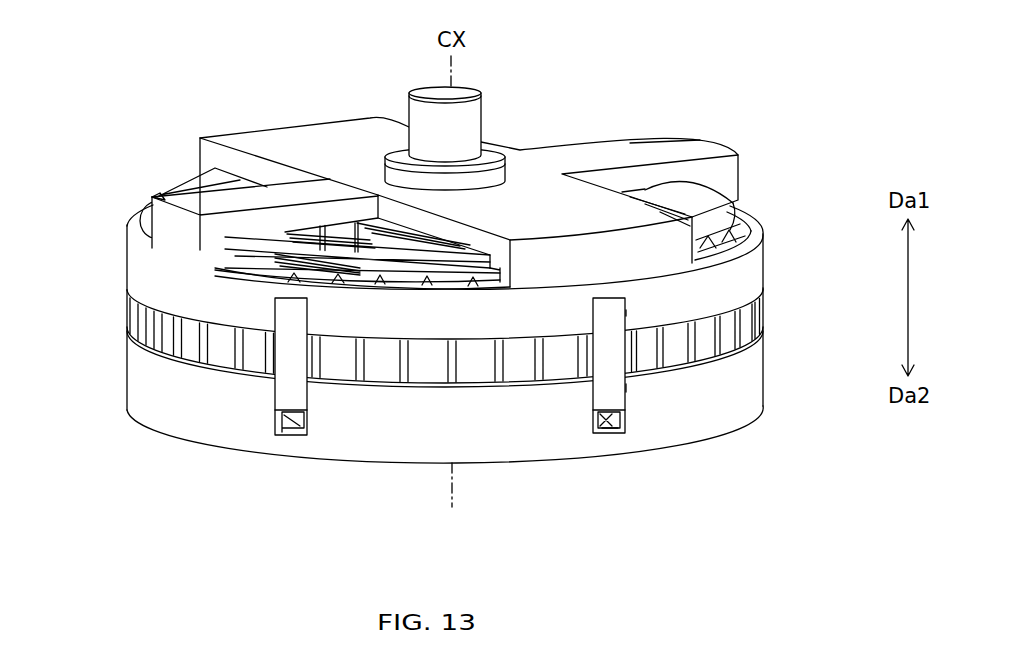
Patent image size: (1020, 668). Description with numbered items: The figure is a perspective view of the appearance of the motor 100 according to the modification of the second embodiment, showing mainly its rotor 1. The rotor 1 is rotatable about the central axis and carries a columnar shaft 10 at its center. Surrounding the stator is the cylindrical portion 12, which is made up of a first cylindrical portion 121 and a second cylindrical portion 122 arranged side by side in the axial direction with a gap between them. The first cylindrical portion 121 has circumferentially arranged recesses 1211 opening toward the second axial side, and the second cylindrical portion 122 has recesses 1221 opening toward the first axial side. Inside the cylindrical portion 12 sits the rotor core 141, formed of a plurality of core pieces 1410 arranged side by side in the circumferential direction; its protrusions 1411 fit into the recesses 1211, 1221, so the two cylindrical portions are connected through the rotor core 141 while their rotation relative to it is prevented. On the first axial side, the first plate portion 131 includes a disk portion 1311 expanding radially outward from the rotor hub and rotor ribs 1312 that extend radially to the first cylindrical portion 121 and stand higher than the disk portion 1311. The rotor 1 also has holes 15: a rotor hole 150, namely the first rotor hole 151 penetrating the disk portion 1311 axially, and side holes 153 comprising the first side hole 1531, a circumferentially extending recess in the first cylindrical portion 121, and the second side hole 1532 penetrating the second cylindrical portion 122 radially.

The motor 100 is at (130, 81).
The rotor 1 is at (217, 123).
The shaft 10 is at (480, 117).
The cylindrical portion 12 is at (53, 250).
The first cylindrical portion 121 is at (133, 270).
The second cylindrical portion 122 is at (133, 374).
The recesses 1211 is at (632, 312).
The recesses 1221 is at (632, 388).
The first plate portion 131 is at (773, 75).
The disk portion 1311 is at (700, 190).
The rotor ribs 1312 is at (657, 155).
The rotor core 141 is at (752, 307).
The core pieces 1410 is at (758, 323).
The protrusions 1411 is at (612, 348).
The holes 15 is at (158, 190).
The rotor hole 150 is at (304, 225).
The first rotor hole 151 is at (343, 225).
The side holes 153 is at (152, 201).
The first side hole 1531 is at (154, 195).
The second side hole 1532 is at (626, 420).